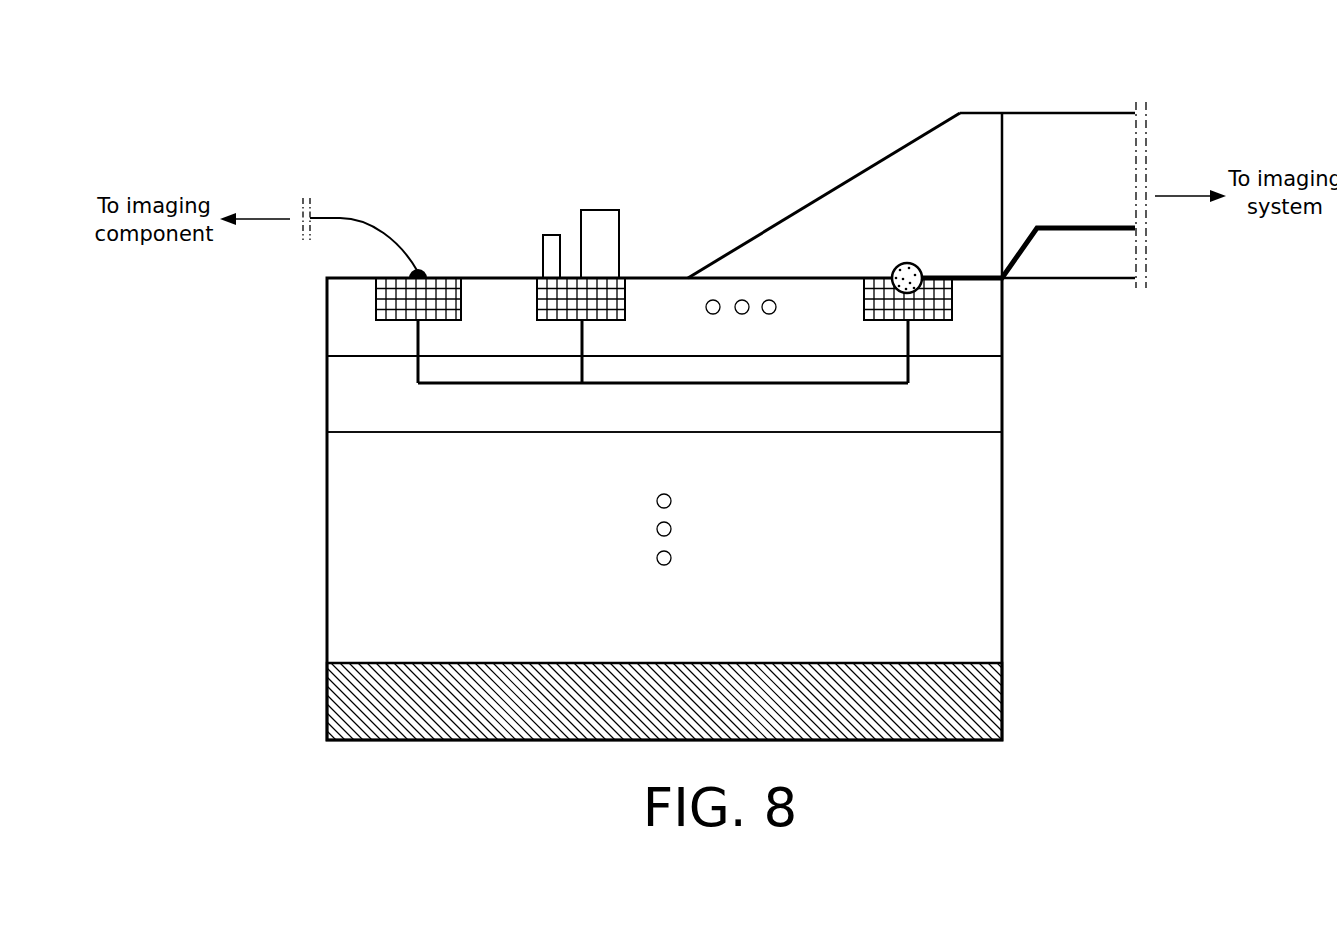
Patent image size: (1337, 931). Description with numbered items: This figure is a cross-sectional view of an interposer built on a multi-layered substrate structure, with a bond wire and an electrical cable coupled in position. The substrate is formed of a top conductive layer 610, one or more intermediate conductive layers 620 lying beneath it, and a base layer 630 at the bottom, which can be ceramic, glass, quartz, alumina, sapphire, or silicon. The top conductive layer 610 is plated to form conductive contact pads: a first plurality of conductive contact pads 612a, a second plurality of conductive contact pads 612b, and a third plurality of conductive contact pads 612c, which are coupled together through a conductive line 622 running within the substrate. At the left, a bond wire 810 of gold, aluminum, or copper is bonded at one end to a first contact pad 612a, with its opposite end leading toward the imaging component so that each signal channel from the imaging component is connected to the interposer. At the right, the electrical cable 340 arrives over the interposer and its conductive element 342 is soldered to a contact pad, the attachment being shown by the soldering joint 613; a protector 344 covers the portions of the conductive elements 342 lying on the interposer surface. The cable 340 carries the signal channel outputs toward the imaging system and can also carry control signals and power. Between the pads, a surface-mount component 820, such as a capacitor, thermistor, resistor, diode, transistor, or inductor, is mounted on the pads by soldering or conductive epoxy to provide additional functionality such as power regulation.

The electrical cable 340 is at (1083, 113).
The conductive element 342 is at (1083, 228).
The protector 344 is at (805, 206).
The top conductive layer 610 is at (327, 313).
The first plurality of conductive contact pads 612a is at (389, 320).
The second plurality of conductive contact pads 612b is at (605, 320).
The third plurality of conductive contact pads 612c is at (928, 320).
The soldering joint 613 is at (905, 263).
The intermediate conductive layer 620 is at (327, 395).
The conductive line 622 is at (482, 383).
The base layer 630 is at (327, 699).
The bond wire 810 is at (347, 218).
The surface-mount component 820 is at (551, 235).